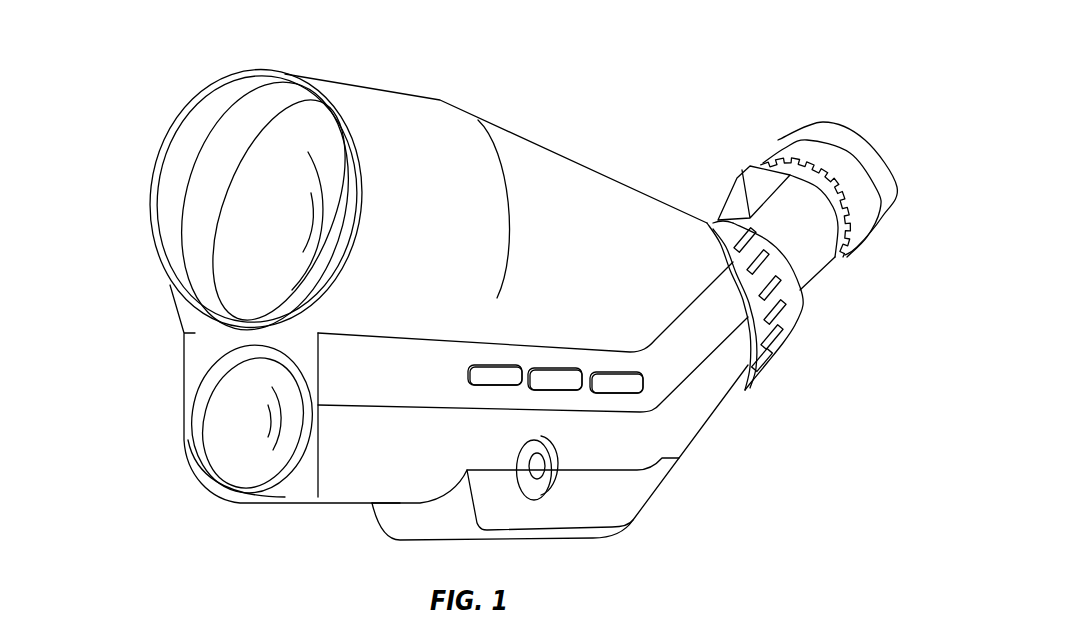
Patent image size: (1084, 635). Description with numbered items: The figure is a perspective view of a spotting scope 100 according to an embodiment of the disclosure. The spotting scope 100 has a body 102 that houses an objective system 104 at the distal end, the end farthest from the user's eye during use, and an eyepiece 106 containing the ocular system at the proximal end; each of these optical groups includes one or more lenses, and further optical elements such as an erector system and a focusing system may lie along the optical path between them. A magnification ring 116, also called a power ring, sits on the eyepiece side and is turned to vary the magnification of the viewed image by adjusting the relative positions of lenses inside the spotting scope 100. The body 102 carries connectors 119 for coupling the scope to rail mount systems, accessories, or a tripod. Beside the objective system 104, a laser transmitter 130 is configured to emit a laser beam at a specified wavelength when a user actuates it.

The spotting scope 100 is at (563, 113).
The body 102 is at (603, 167).
The objective system 104 is at (175, 104).
The eyepiece 106 is at (836, 303).
The magnification ring 116 is at (737, 156).
The connector 119 is at (556, 478).
The laser transmitter 130 is at (172, 468).